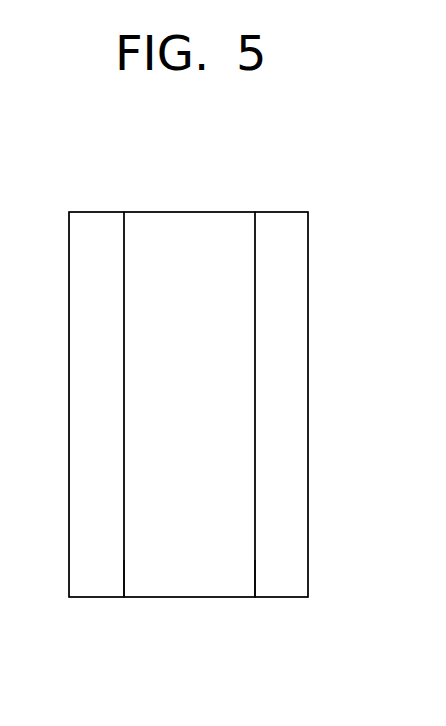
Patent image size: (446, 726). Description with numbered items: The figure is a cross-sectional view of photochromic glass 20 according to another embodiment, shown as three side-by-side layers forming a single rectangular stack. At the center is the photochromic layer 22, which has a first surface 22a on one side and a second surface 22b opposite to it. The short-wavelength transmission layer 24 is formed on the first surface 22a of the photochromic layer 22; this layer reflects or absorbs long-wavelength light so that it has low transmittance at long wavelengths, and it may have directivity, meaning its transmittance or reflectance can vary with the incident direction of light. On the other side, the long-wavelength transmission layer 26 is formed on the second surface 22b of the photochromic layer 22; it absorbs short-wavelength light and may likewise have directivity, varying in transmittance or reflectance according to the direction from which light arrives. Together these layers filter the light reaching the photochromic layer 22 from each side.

The photochromic glass 20 is at (330, 139).
The photochromic layer 22 is at (186, 222).
The first surface 22a is at (125, 583).
The second surface 22b is at (254, 583).
The short-wavelength transmission layer 24 is at (96, 222).
The long-wavelength transmission layer 26 is at (283, 222).